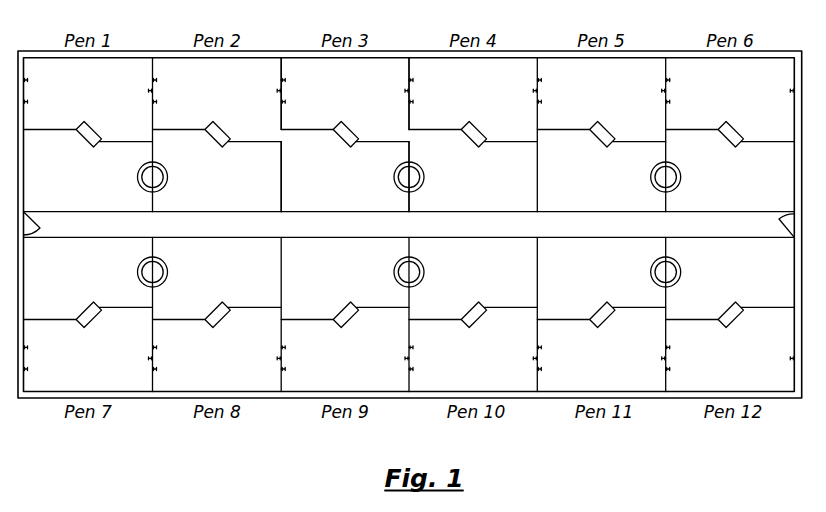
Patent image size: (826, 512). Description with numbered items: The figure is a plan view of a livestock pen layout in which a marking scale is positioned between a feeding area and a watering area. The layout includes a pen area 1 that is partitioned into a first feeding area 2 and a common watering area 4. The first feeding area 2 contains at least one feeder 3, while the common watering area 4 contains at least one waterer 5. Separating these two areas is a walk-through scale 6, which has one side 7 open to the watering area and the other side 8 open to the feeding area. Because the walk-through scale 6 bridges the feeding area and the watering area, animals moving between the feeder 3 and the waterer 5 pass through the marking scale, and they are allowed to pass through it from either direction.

The pen area 1 is at (379, 63).
The first feeding area 2 is at (345, 177).
The feeder 3 is at (394, 186).
The common watering area 4 is at (345, 94).
The waterer 5 is at (404, 96).
The walk-through scale 6 is at (342, 142).
The one side 7 is at (338, 123).
The other side 8 is at (355, 143).